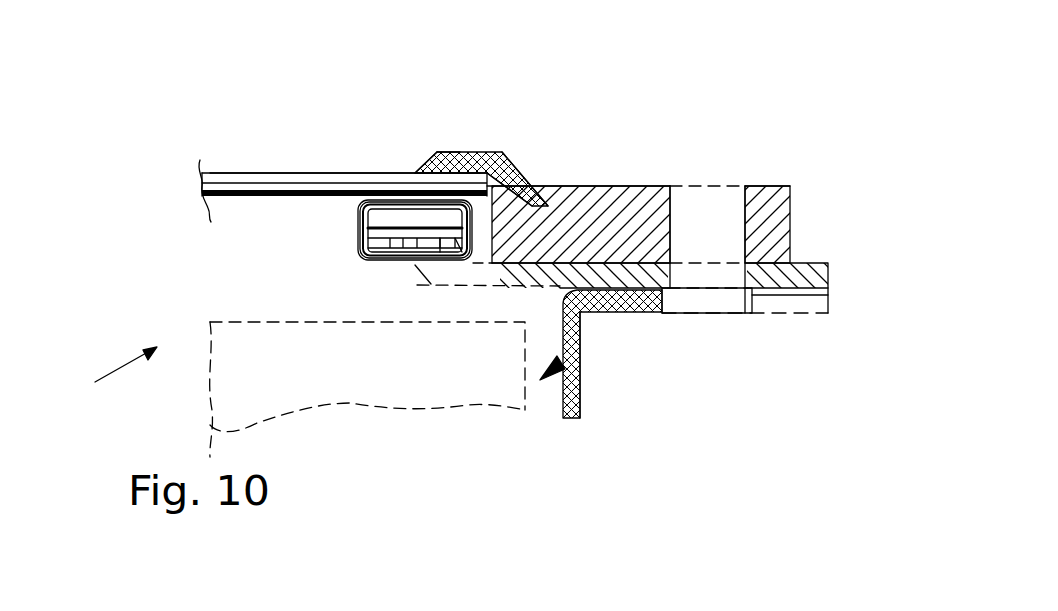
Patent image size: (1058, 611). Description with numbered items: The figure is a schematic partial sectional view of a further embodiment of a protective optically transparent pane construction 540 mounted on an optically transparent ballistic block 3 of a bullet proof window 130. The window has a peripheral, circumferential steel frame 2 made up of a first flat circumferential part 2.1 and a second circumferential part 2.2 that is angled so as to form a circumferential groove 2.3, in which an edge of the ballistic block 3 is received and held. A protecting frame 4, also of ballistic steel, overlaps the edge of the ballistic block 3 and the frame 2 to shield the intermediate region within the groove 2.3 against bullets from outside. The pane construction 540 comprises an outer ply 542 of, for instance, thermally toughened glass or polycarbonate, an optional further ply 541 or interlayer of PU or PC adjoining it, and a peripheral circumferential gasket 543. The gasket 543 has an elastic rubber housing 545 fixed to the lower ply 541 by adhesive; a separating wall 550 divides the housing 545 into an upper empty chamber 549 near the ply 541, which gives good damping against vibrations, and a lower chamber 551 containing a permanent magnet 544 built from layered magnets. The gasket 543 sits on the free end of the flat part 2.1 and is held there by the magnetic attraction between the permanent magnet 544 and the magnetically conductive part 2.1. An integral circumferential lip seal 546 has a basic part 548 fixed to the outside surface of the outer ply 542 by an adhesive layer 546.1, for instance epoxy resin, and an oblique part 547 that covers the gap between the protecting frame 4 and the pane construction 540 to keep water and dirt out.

The bullet proof window 130 is at (112, 385).
The ballistic block 3 is at (435, 388).
The frame 2 is at (632, 290).
The first flat and circumferential part 2.1 is at (590, 292).
The second circumferential part 2.2 is at (572, 418).
The circumferential groove 2.3 is at (580, 363).
The protecting frame 4 is at (588, 186).
The protective optically transparent pane construction 540 is at (295, 185).
The further optional ply 541 is at (243, 196).
The outer ply 542 is at (222, 182).
The gasket 543 is at (372, 200).
The permanent magnet 544 is at (415, 217).
The housing 545 is at (360, 240).
The lip seal 546 is at (448, 157).
The adhesive layer 546.1 is at (433, 165).
The oblique part 547 is at (517, 167).
The basic part 548 is at (412, 170).
The upper empty chamber 549 is at (413, 236).
The separating wall 550 is at (441, 252).
The lower chamber 551 is at (462, 252).